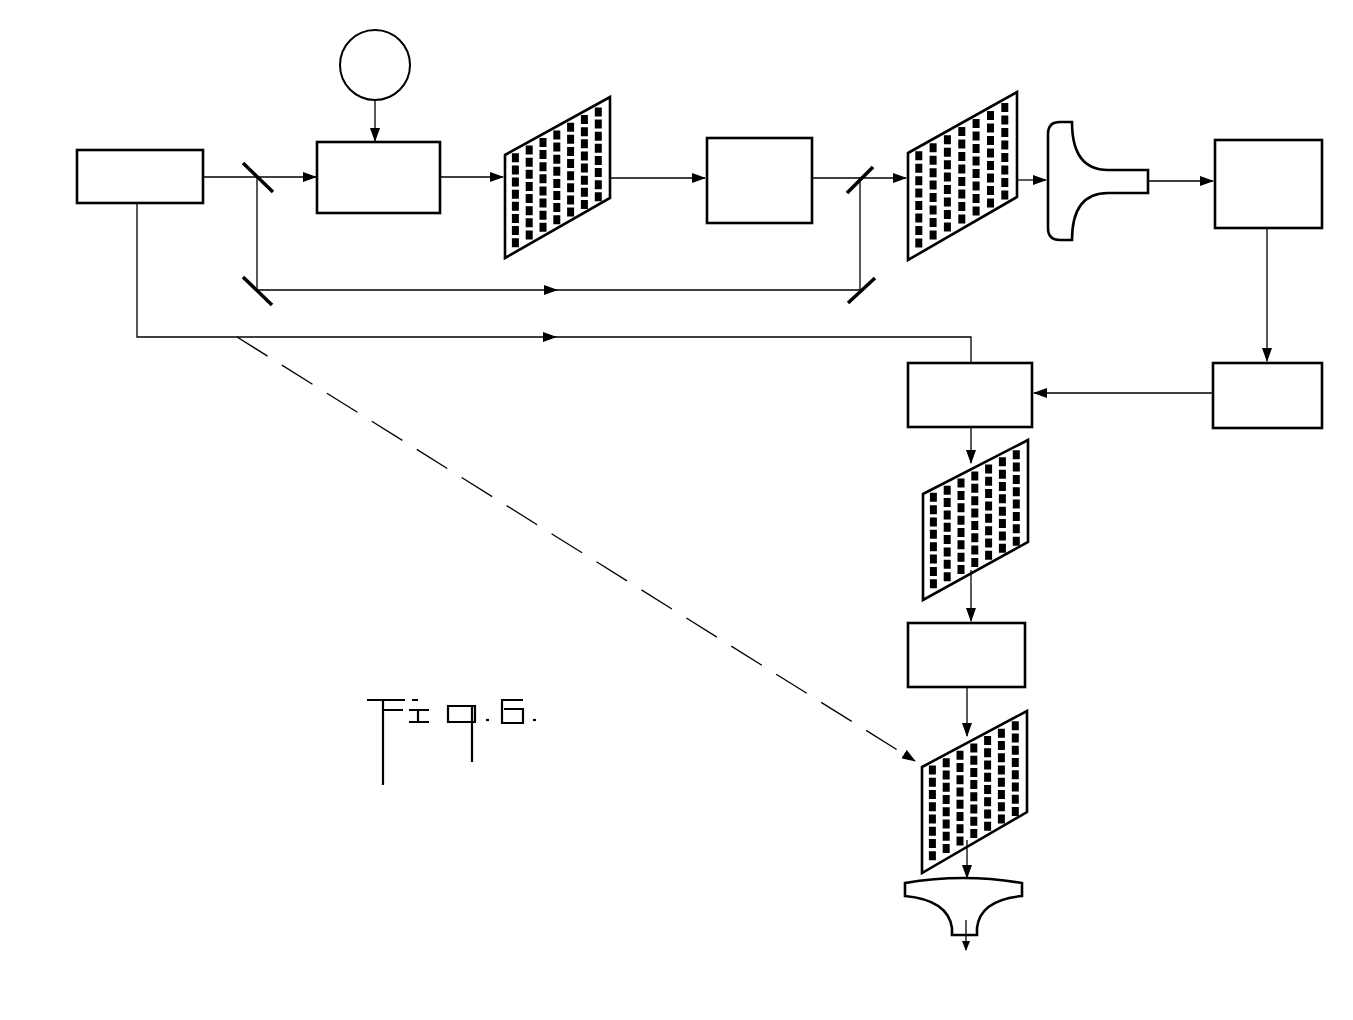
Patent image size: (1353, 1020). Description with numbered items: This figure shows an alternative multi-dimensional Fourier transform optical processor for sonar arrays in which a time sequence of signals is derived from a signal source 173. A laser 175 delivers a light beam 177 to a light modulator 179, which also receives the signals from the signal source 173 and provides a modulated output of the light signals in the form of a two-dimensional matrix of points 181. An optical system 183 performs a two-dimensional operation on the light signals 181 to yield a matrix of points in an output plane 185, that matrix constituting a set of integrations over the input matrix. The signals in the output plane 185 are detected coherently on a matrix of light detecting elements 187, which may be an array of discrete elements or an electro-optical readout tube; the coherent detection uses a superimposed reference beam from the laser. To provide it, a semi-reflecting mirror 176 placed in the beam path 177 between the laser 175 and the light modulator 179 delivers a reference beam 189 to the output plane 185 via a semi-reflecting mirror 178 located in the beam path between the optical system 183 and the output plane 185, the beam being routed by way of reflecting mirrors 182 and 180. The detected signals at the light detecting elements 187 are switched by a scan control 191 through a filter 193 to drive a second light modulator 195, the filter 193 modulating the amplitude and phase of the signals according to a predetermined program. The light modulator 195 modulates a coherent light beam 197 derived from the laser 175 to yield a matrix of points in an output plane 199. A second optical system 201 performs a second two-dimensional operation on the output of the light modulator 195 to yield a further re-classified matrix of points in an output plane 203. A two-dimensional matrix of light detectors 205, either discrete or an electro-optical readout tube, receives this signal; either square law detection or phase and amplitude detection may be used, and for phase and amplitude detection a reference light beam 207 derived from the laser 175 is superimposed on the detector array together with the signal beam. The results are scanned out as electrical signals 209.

The signal source 173 is at (400, 88).
The laser 175 is at (156, 128).
The semi-reflecting mirror 176 is at (248, 168).
The light beam 177 is at (287, 177).
The semi-reflecting mirror 178 is at (865, 173).
The light modulator 179 is at (373, 215).
The reflecting mirror 180 is at (872, 287).
The two-dimensional matrix of points 181 is at (568, 120).
The reflecting mirror 182 is at (258, 300).
The optical system 183 is at (752, 140).
The output plane 185 is at (942, 137).
The matrix of light detecting elements 187 is at (1080, 215).
The reference beam 189 is at (614, 293).
The scan control 191 is at (1275, 140).
The filter 193 is at (1273, 430).
The light modulator 195 is at (908, 388).
The coherent light beam 197 is at (596, 339).
The output plane 199 is at (1028, 494).
The optical system 201 is at (1027, 629).
The output plane 203 is at (1028, 748).
The two-dimensional matrix of light detectors 205 is at (1022, 890).
The reference light beam 207 is at (494, 498).
The electrical signals 209 is at (980, 926).